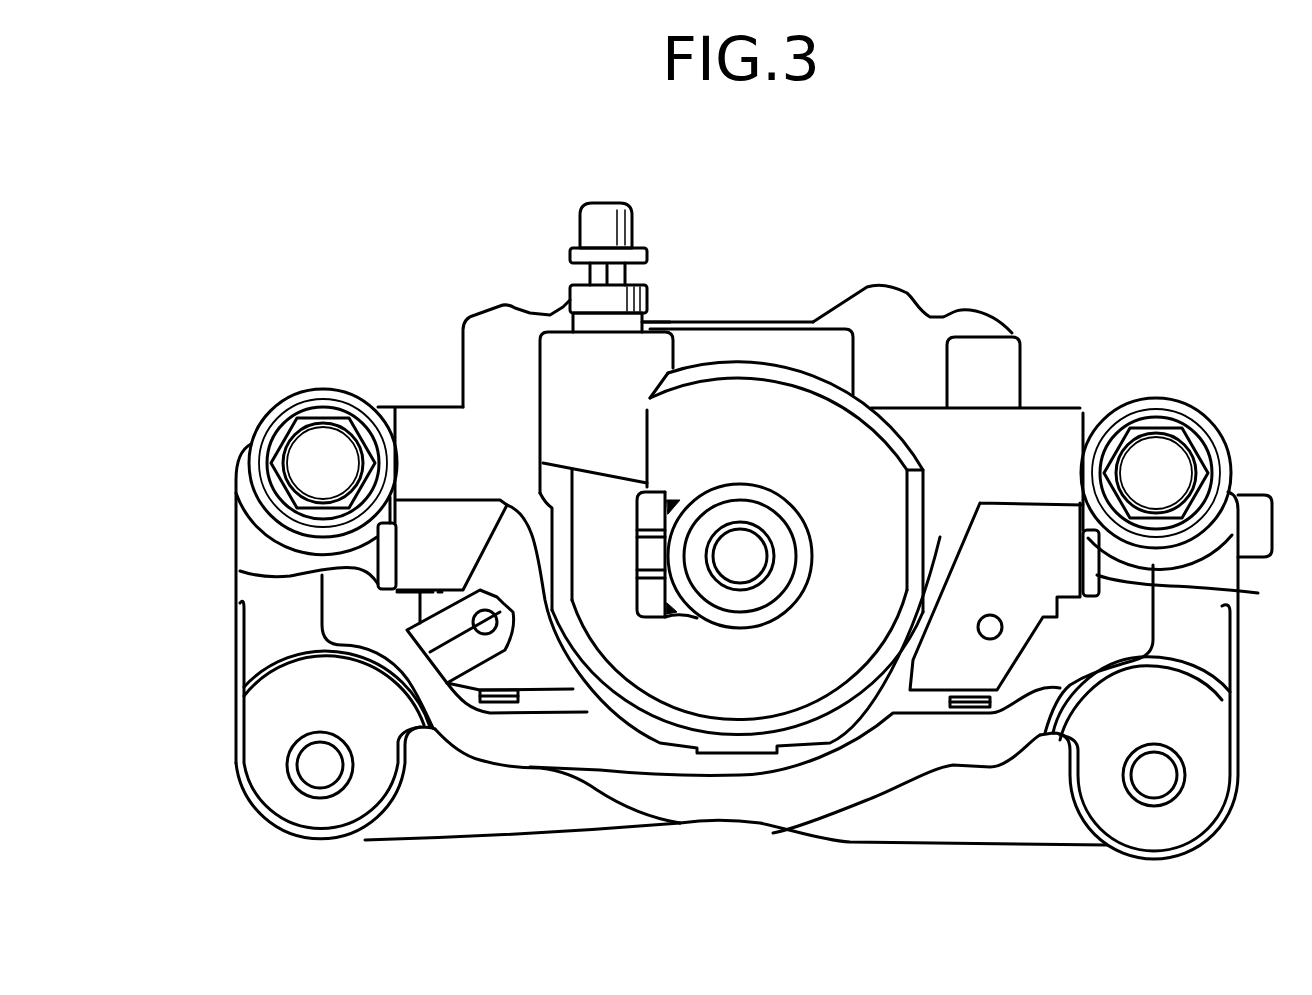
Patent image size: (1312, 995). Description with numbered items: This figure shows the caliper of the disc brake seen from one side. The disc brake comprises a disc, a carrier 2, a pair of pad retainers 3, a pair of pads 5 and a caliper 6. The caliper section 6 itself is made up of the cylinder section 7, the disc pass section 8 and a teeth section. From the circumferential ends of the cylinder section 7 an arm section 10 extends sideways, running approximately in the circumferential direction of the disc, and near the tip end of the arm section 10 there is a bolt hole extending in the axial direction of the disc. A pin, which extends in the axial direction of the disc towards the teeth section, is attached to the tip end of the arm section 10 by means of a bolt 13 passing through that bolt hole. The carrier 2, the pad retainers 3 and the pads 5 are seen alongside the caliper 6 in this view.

The carrier 2 is at (1242, 626).
The pad retainers 3 is at (240, 571).
The pads 5 is at (939, 702).
The caliper 6 is at (1025, 327).
The cylinder section 7 is at (750, 356).
The disc pass section 8 is at (698, 314).
The arm section 10 is at (397, 407).
The bolt 13 is at (315, 453).